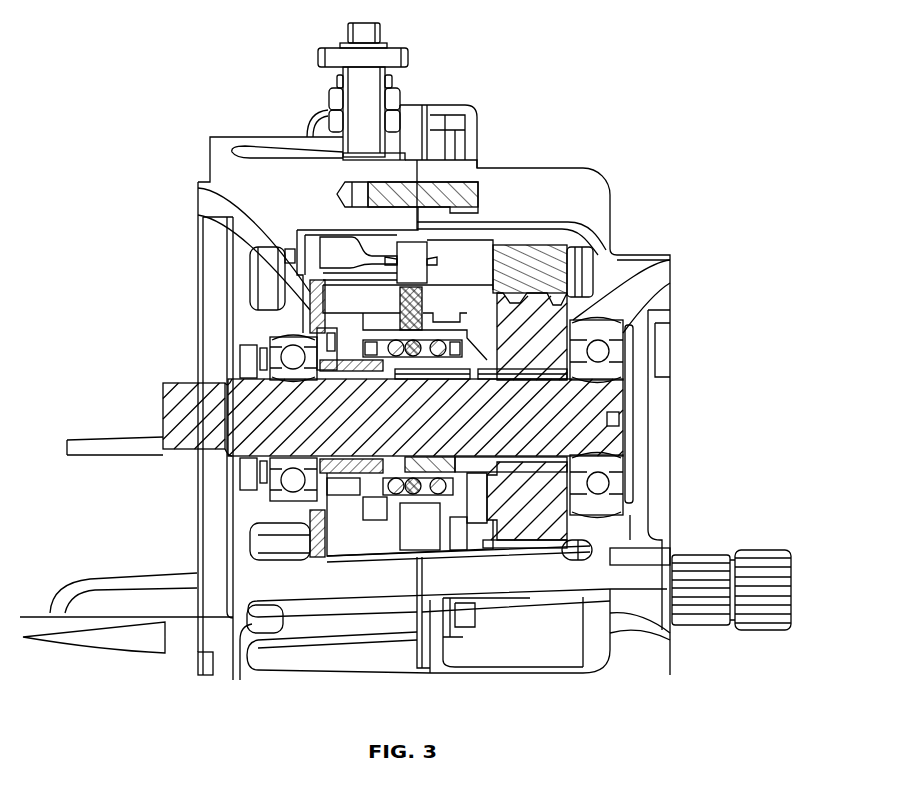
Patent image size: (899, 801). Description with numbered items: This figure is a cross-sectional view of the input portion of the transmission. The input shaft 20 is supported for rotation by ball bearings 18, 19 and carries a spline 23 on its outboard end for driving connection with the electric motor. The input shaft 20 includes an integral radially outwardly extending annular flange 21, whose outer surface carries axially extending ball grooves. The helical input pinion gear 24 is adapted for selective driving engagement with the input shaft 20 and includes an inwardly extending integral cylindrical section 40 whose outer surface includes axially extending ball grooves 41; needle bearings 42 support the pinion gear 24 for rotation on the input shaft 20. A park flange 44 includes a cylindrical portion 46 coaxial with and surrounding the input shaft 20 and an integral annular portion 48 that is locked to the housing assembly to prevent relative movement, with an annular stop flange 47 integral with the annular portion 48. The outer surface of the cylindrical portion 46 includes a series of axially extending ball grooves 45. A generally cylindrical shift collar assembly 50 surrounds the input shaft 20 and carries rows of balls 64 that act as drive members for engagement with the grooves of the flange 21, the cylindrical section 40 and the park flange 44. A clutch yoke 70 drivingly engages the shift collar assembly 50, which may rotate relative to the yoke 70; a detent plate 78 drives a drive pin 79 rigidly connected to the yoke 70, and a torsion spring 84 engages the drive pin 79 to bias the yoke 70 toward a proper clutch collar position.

The ball bearing 18 is at (287, 335).
The ball bearing 19 is at (670, 291).
The input shaft 20 is at (163, 400).
The annular flange 21 is at (343, 370).
The spline 23 is at (177, 453).
The helical input pinion gear 24 is at (670, 253).
The cylindrical section 40 is at (510, 358).
The ball grooves 41 is at (477, 355).
The needle bearings 42 is at (432, 383).
The park flange 44 is at (350, 485).
The ball grooves 45 is at (327, 295).
The cylindrical portion 46 is at (283, 383).
The annular stop flange 47 is at (332, 490).
The annular portion 48 is at (273, 312).
The shift collar assembly 50 is at (445, 313).
The balls 64 is at (433, 488).
The clutch yoke 70 is at (198, 215).
The detent plate 78 is at (197, 190).
The drive pin 79 is at (413, 277).
The torsion spring 84 is at (333, 237).